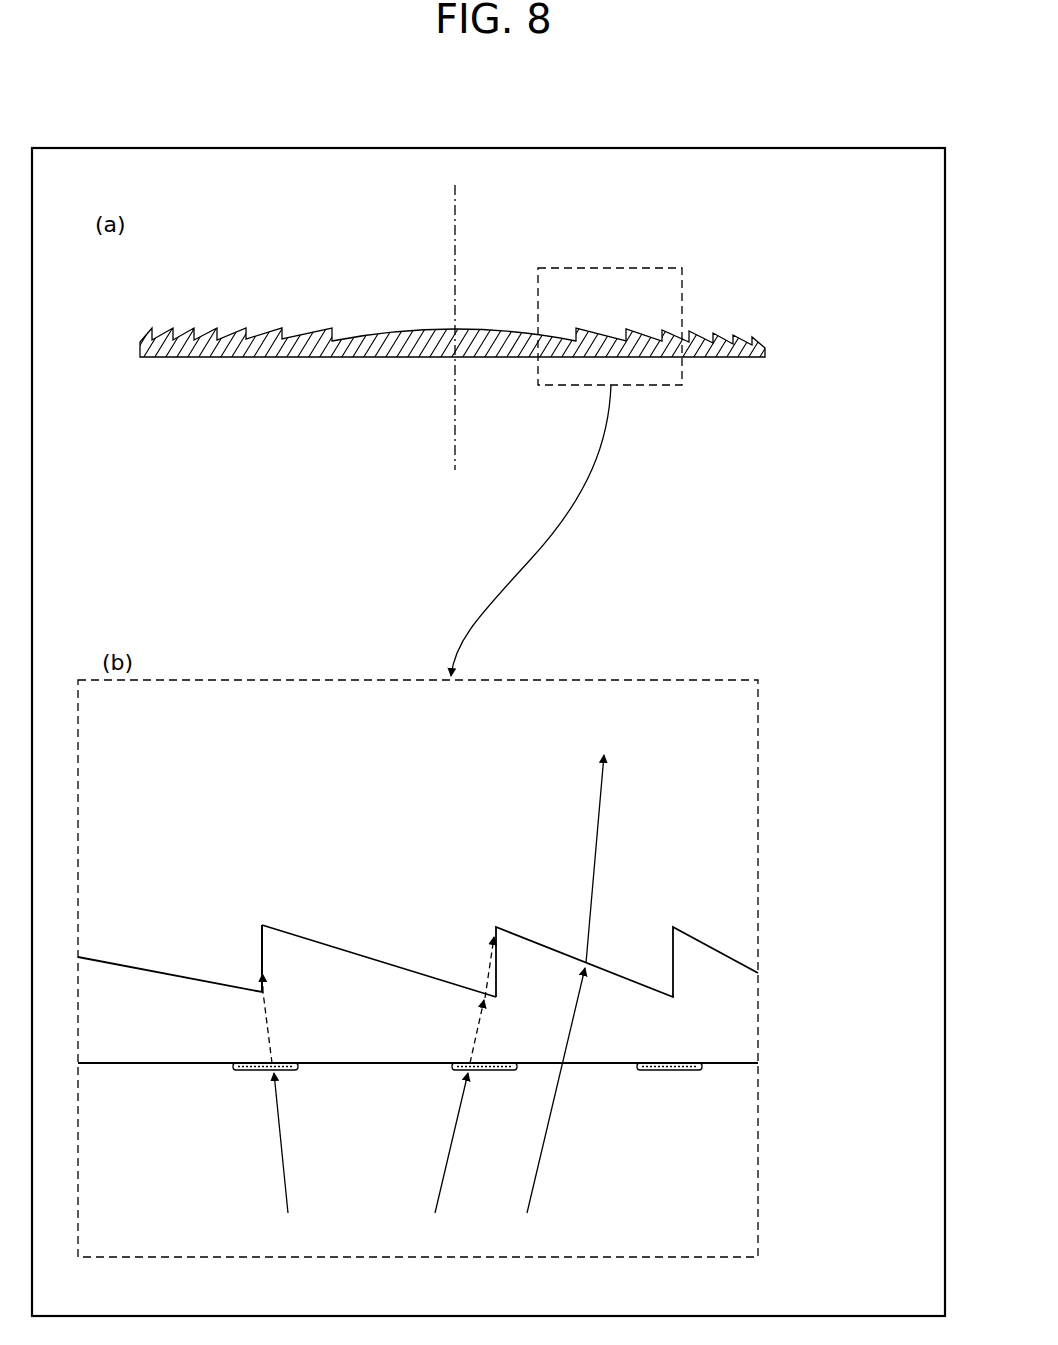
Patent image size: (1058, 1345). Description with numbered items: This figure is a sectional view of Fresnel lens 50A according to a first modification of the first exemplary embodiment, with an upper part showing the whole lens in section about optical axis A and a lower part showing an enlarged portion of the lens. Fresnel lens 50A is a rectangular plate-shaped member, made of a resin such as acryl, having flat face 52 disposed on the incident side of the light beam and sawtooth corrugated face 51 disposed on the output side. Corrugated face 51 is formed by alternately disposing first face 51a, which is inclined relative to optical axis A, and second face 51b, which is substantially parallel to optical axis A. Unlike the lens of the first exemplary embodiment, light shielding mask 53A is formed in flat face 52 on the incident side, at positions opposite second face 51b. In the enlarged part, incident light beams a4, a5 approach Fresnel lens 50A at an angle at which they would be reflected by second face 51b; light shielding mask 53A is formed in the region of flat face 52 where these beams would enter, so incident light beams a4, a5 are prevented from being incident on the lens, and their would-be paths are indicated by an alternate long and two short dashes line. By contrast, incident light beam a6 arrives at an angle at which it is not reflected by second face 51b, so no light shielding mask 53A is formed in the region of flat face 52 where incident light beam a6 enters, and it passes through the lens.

The Fresnel lens 50A is at (766, 348).
The corrugated face 51 is at (375, 838).
The first face 51a is at (356, 945).
The second face 51b is at (262, 928).
The flat face 52 is at (389, 1069).
The light shielding mask 53A is at (241, 1072).
The incident light beam a4 is at (284, 1110).
The incident light beam a5 is at (458, 1092).
The incident light beam a6 is at (558, 1001).
The optical axis A is at (452, 341).